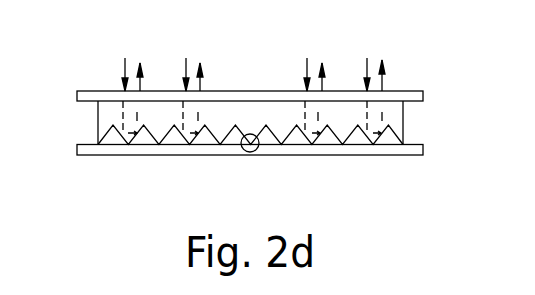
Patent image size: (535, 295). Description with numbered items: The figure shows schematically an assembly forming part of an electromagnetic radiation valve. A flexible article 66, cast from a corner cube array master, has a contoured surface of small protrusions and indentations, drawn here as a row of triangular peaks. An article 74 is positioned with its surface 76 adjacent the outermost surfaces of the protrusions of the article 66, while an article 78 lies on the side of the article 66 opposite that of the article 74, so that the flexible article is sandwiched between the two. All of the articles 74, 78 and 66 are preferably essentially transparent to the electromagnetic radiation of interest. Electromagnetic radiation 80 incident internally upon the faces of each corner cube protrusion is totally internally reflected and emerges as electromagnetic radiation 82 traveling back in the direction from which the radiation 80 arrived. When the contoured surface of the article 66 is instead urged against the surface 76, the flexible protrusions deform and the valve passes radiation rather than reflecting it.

The article 66 is at (98, 112).
The article 74 is at (423, 150).
The surface 76 is at (413, 140).
The article 78 is at (418, 91).
The electromagnetic radiation 80 is at (125, 58).
The electromagnetic radiation 82 is at (140, 63).